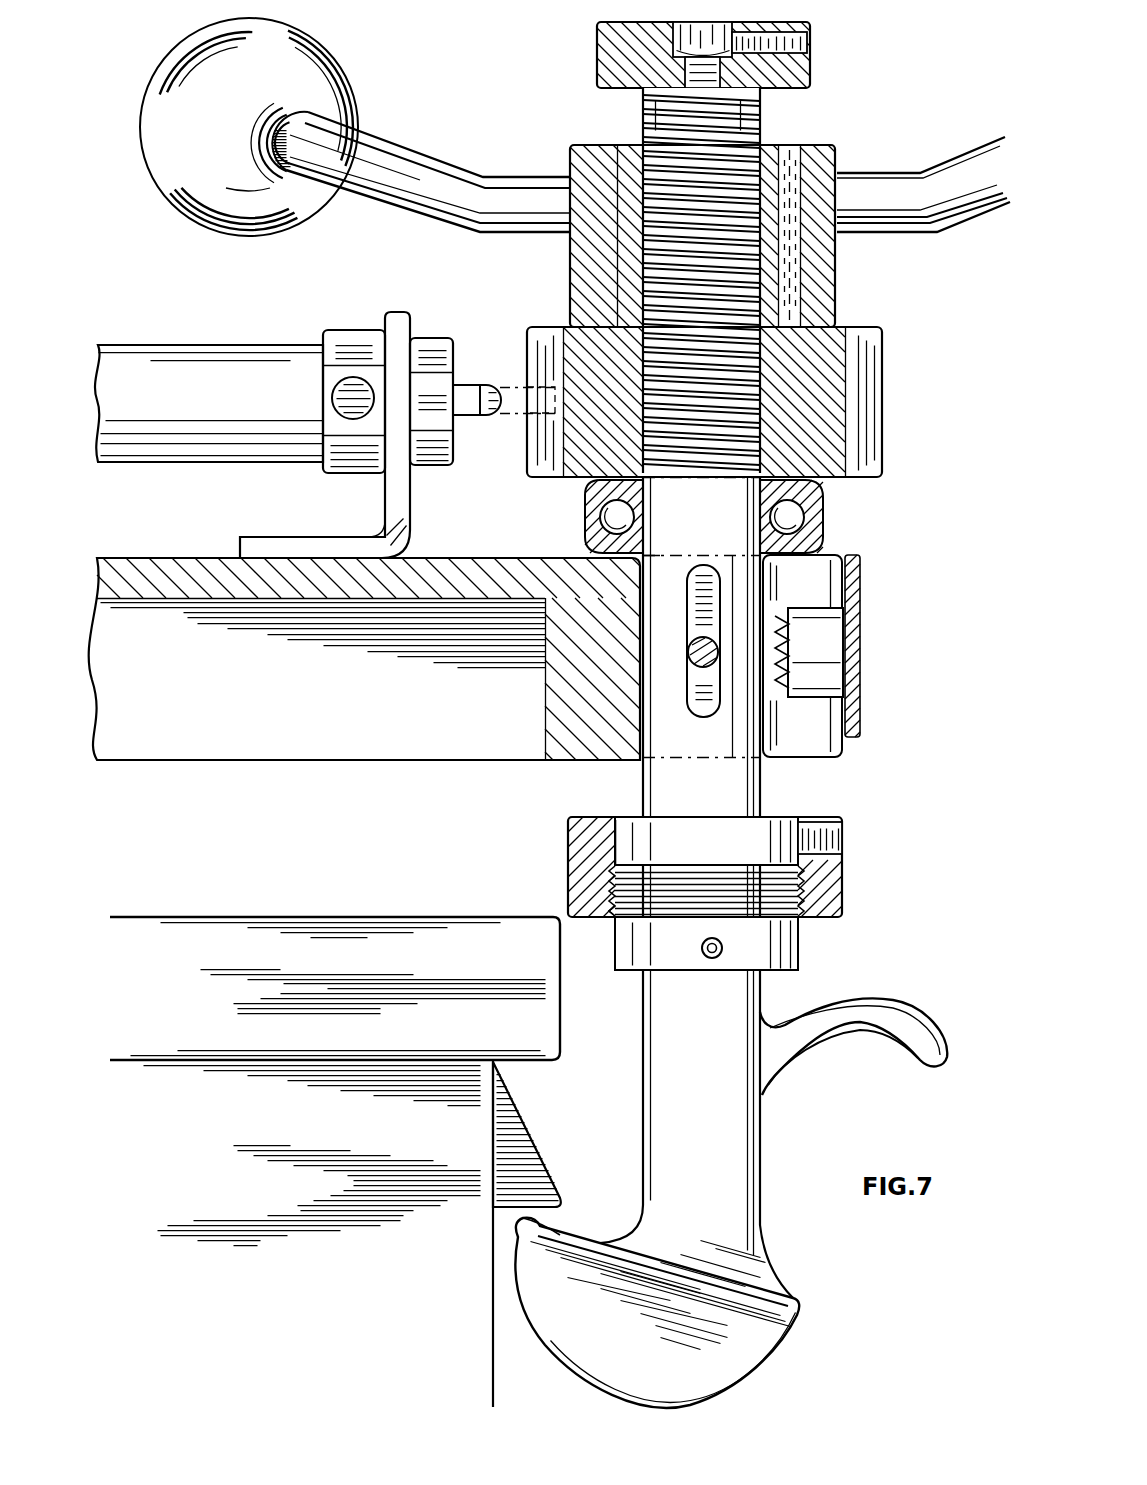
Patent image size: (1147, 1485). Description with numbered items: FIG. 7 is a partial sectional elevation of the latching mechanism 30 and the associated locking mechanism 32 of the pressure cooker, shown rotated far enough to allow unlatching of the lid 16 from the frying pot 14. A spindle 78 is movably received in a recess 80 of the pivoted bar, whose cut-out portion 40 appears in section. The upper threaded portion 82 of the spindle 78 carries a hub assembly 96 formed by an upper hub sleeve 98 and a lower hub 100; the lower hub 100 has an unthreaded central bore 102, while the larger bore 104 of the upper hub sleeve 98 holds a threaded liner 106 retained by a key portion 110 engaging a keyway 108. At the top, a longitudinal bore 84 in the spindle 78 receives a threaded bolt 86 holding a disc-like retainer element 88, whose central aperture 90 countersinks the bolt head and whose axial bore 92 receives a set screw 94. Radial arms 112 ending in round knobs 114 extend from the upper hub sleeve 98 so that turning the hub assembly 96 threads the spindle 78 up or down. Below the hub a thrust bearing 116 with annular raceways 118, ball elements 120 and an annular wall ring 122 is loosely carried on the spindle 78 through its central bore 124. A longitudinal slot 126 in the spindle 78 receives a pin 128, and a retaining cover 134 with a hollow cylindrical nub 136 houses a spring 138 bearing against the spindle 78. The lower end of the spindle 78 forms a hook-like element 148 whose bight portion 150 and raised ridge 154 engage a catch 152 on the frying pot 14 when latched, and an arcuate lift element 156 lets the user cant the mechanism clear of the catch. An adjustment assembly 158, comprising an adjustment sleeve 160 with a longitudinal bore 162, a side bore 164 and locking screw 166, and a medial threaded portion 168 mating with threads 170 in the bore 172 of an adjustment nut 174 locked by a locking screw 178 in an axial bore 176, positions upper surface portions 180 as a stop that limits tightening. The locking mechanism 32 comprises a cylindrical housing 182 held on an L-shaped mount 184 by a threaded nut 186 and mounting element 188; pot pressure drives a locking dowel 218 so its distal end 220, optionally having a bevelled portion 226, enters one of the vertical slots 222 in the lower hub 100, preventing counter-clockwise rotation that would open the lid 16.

The frying pot 14 is at (319, 1233).
The lid 16 is at (295, 920).
The latching mechanism 30 is at (565, 122).
The locking mechanism 32 is at (190, 330).
The cut-out portion 40 is at (162, 600).
The spindle 78 is at (725, 790).
The recess 80 is at (800, 582).
The threaded portion 82 is at (762, 130).
The longitudinal bore 84 is at (648, 125).
The threaded bolt 86 is at (685, 72).
The retainer element 88 is at (597, 32).
The central aperture 90 is at (673, 46).
The axial bore 92 is at (810, 42).
The set screw 94 is at (769, 57).
The hub assembly 96 is at (842, 270).
The upper hub sleeve 98 is at (820, 160).
The lower hub 100 is at (820, 380).
The central bore 102 is at (620, 225).
The longitudinal bore 104 is at (765, 410).
The threaded liner 106 is at (770, 262).
The keyway 108 is at (800, 195).
The key portion 110 is at (790, 288).
The radial arms 112 is at (410, 150).
The round knobs 114 is at (175, 97).
The thrust bearing 116 is at (833, 497).
The annular raceways 118 is at (588, 490).
The ball elements 120 is at (603, 517).
The annular wall ring 122 is at (820, 520).
The central bore 124 is at (648, 560).
The slot 126 is at (700, 705).
The pin 128 is at (700, 650).
The retaining cover 134 is at (862, 680).
The hollow cylindrical nub 136 is at (830, 635).
The spring 138 is at (783, 692).
The hook-like element 148 is at (745, 1330).
The bight portion 150 is at (535, 1297).
The catch 152 is at (520, 1135).
The raised ridge 154 is at (535, 1222).
The lift element 156 is at (900, 1007).
The adjustment assembly 158 is at (845, 882).
The adjustment sleeve 160 is at (798, 945).
The longitudinal bore 162 is at (650, 848).
The axially extending bore 164 is at (708, 958).
The locking screw 166 is at (702, 945).
The medial threaded portion 168 is at (618, 916).
The threads 170 is at (615, 822).
The bore 172 is at (612, 872).
The adjustment nut 174 is at (835, 905).
The axial bore 176 is at (830, 832).
The locking screw 178 is at (845, 845).
The upper surface portions 180 is at (567, 820).
The cylindrical housing 182 is at (232, 350).
The L-shaped mount 184 is at (400, 505).
The threaded nut 186 is at (440, 346).
The mounting element 188 is at (353, 338).
The locking dowel 218 is at (483, 377).
The distal end 220 is at (465, 418).
The vertical slots 222 is at (862, 437).
The bevelled portion 226 is at (492, 413).